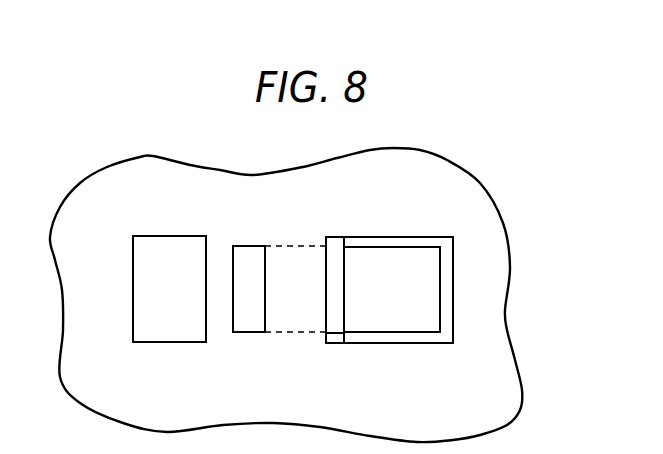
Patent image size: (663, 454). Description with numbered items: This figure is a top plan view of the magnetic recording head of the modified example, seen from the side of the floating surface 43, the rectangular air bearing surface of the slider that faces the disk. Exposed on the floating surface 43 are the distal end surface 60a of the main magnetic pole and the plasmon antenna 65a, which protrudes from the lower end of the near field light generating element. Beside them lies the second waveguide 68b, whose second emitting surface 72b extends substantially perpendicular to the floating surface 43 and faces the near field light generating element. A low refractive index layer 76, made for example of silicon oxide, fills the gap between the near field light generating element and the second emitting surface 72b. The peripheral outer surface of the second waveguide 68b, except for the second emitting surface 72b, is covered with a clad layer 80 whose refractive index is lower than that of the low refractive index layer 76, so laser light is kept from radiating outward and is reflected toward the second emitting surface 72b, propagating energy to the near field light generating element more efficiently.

The floating surface 43 is at (502, 397).
The distal end surface of the main magnetic pole 60a is at (170, 249).
The plasmon antenna 65a is at (250, 262).
The second waveguide 68b is at (400, 262).
The second emitting surface 72b is at (340, 259).
The low refractive index layer 76 is at (333, 333).
The clad layer 80 is at (453, 288).